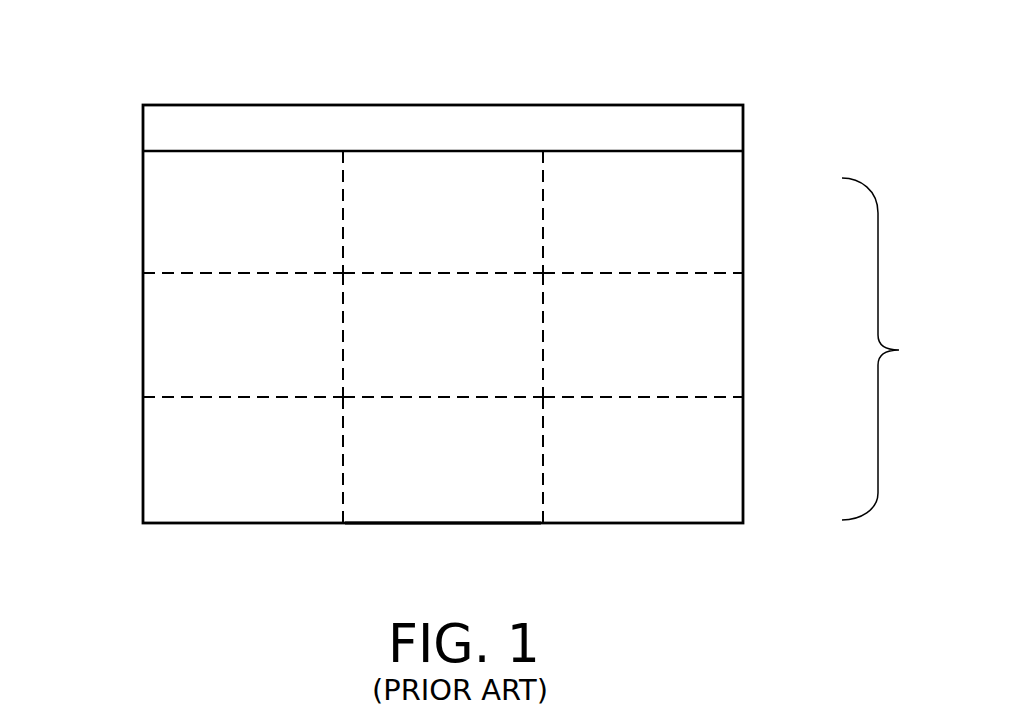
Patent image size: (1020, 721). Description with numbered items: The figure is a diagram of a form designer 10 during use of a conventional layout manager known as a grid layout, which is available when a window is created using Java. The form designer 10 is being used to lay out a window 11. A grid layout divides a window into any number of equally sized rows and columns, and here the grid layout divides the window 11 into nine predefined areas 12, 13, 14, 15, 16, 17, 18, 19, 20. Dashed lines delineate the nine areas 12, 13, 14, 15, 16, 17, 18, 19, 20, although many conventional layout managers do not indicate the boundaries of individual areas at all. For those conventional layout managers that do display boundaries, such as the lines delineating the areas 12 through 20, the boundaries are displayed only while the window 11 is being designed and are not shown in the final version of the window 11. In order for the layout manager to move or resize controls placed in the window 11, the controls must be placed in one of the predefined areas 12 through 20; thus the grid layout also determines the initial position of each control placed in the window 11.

The form designer 10 is at (508, 27).
The window 11 is at (889, 349).
The predefined area 12 is at (143, 218).
The predefined area 13 is at (421, 151).
The predefined area 14 is at (745, 217).
The predefined area 15 is at (143, 338).
The predefined area 16 is at (403, 397).
The predefined area 17 is at (745, 337).
The predefined area 18 is at (143, 459).
The predefined area 19 is at (493, 524).
The predefined area 20 is at (745, 457).